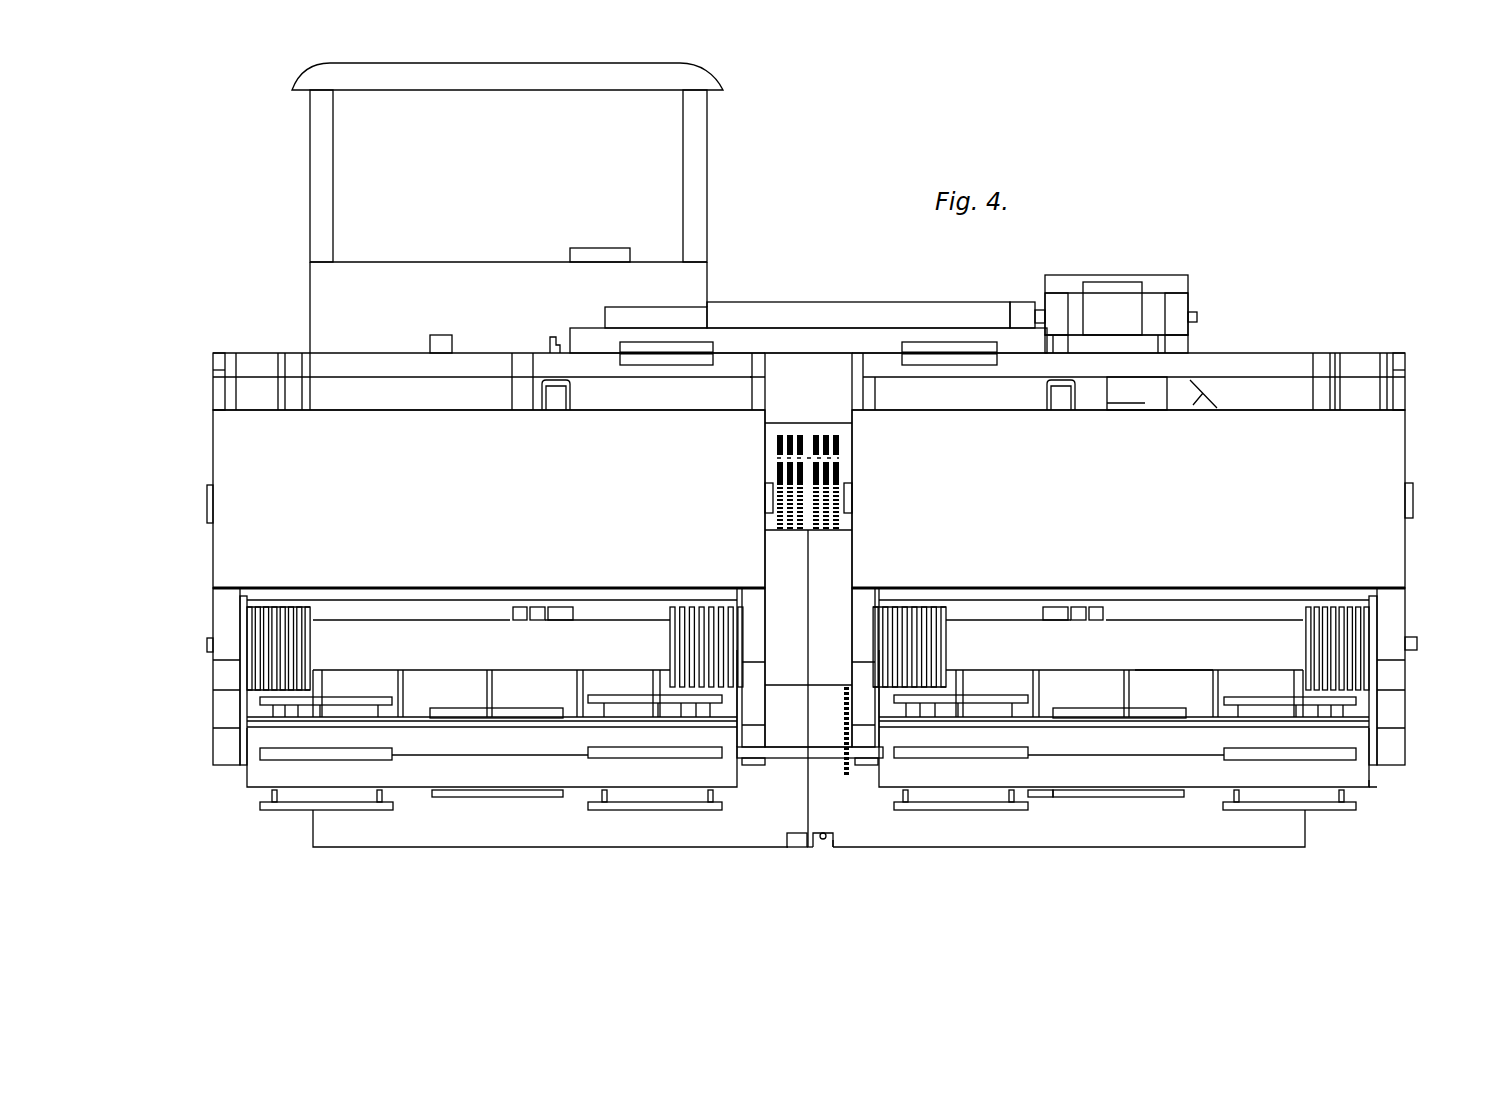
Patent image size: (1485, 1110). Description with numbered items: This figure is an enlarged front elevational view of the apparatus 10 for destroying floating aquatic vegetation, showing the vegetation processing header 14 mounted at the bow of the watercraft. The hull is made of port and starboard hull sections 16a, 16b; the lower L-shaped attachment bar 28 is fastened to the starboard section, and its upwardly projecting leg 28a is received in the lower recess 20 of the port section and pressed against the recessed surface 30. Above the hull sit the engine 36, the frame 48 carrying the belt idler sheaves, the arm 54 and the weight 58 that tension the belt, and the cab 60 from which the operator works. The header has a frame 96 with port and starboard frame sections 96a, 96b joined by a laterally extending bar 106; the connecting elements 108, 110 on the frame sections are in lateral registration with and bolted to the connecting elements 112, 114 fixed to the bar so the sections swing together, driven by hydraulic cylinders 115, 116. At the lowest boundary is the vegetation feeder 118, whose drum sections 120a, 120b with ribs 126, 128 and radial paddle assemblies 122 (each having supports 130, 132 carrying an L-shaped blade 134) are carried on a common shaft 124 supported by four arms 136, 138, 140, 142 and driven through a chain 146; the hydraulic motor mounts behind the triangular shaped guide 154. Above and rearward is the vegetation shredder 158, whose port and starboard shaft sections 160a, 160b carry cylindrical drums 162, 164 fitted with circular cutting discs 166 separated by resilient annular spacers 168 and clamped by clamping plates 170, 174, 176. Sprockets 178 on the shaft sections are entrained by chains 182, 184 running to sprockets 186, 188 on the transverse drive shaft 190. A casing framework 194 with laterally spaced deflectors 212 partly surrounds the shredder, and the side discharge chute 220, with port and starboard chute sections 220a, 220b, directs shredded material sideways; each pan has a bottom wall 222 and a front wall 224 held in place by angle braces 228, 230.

The apparatus 10 is at (296, 182).
The vegetation processing header 14 is at (1403, 353).
The port hull section 16a is at (1160, 849).
The starboard hull section 16b is at (540, 849).
The lower recess 20 is at (835, 849).
The lower L-shaped attachment bar 28 is at (790, 849).
The upwardly projecting leg 28a is at (825, 849).
The recessed surface 30 is at (824, 832).
The power source 36 is at (1025, 303).
The frame 48 is at (1207, 392).
The arm 54 is at (1183, 347).
The weight 58 is at (1175, 280).
The cab 60 is at (707, 143).
The frame 96 is at (730, 300).
The port frame section 96a is at (1358, 355).
The starboard frame section 96b is at (333, 357).
The laterally extending bar 106 is at (785, 332).
The L-shaped connecting element 108 is at (930, 364).
The L-shaped connecting element 110 is at (645, 364).
The L-shaped connecting element 112 is at (965, 340).
The L-shaped connecting element 114 is at (665, 340).
The hydraulic cylinder 115 is at (1058, 400).
The hydraulic cylinder 116 is at (575, 395).
The vegetation feeder 118 is at (1378, 789).
The port drum section 120a is at (1210, 787).
The starboard drum section 120b is at (405, 787).
The paddle assembly 122 is at (473, 719).
The common shaft 124 is at (790, 759).
The rib 126 is at (1163, 754).
The rib 128 is at (455, 761).
The radially projecting support 130 is at (1028, 760).
The radially projecting support 132 is at (916, 797).
The L-shaped blade 134 is at (960, 811).
The arm 136 is at (1400, 720).
The arm 138 is at (855, 766).
The arm 140 is at (752, 766).
The arm 142 is at (240, 767).
The chain 146 is at (845, 700).
The triangular shaped guide 154 is at (850, 545).
The vegetation shredder 158 is at (1320, 605).
The port shaft section 160a is at (1417, 645).
The starboard shaft section 160b is at (207, 645).
The cylindrical drum 162 is at (1091, 656).
The cylindrical drum 164 is at (418, 653).
The circular cutting disc 166 is at (302, 612).
The annular spacer 168 is at (304, 657).
The clamping plate 170 is at (1385, 603).
The clamping plate 174 is at (887, 598).
The clamping plate 176 is at (742, 595).
The sprockets 178 is at (250, 600).
The chain 182 is at (850, 490).
The chain 184 is at (767, 500).
The sprockets 186 is at (843, 438).
The sprockets 188 is at (776, 437).
The transverse drive shaft 190 is at (843, 455).
The casing framework 194 is at (1147, 690).
The deflector 212 is at (323, 690).
The side discharge chute 220 is at (1408, 420).
The port chute section 220a is at (1395, 465).
The starboard chute section 220b is at (213, 522).
The bottom wall 222 is at (588, 590).
The front wall 224 is at (530, 493).
The angle brace 228 is at (763, 405).
The angle brace 230 is at (218, 403).